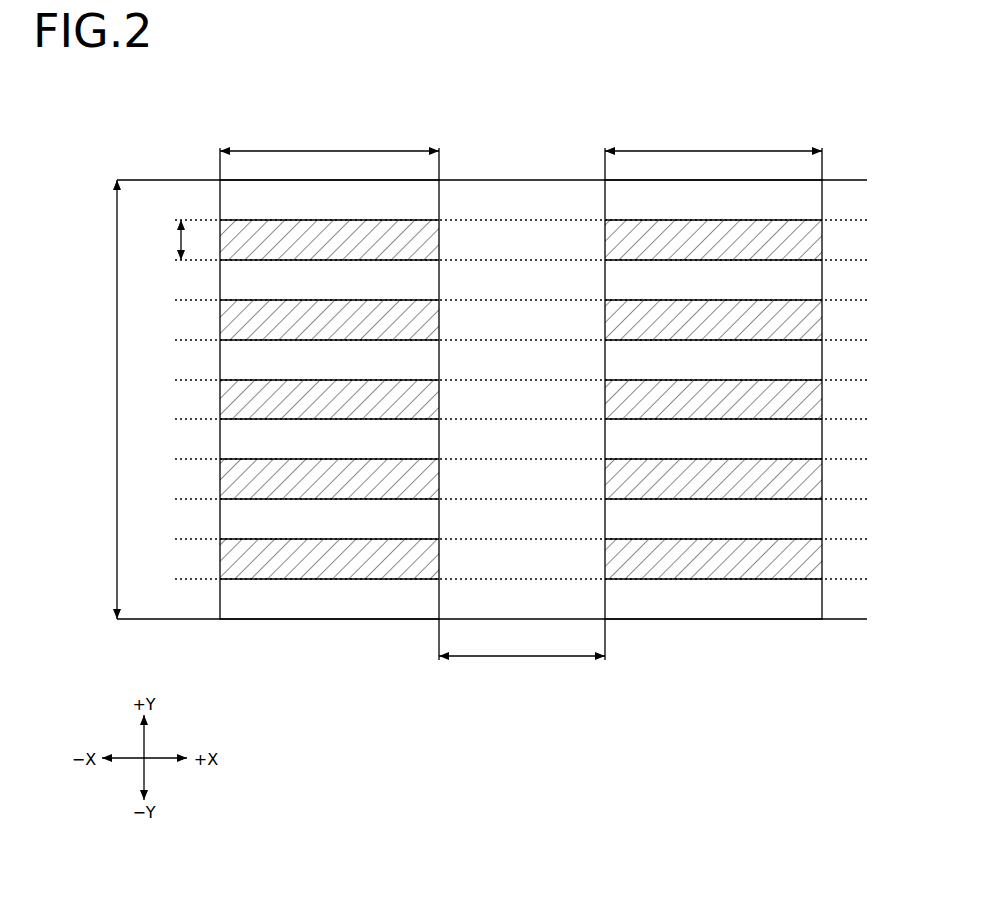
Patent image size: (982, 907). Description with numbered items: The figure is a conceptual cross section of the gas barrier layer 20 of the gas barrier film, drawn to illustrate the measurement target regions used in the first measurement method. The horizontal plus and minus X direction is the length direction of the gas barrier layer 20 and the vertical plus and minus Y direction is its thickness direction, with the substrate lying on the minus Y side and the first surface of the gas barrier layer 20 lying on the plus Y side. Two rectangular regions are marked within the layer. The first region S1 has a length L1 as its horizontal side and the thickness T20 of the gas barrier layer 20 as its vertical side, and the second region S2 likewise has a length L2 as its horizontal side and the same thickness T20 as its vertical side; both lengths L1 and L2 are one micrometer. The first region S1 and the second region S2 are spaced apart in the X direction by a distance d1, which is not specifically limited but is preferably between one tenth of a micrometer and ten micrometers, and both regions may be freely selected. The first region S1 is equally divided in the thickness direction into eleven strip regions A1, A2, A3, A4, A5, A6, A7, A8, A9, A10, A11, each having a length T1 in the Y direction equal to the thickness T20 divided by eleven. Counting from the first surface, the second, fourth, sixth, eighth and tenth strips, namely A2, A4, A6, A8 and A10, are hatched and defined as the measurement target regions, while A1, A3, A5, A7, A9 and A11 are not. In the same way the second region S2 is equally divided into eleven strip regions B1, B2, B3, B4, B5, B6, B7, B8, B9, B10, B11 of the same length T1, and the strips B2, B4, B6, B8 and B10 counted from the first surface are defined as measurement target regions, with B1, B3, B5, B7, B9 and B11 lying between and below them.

The gas barrier layer 20 is at (828, 100).
The first region S1 is at (325, 624).
The second region S2 is at (710, 624).
The length L1 is at (329, 138).
The length L2 is at (713, 138).
The distance d1 is at (522, 643).
The thickness T20 is at (100, 399).
The length of each strip region T1 is at (178, 239).
The first strip region A1 is at (329, 200).
The second strip region A2 is at (329, 240).
The third strip region A3 is at (329, 280).
The fourth strip region A4 is at (329, 320).
The fifth strip region A5 is at (329, 360).
The sixth strip region A6 is at (329, 399).
The seventh strip region A7 is at (329, 439).
The eighth strip region A8 is at (329, 479).
The ninth strip region A9 is at (329, 519).
The tenth strip region A10 is at (329, 559).
The eleventh strip region A11 is at (329, 599).
The first strip region B1 is at (713, 200).
The second strip region B2 is at (713, 240).
The third strip region B3 is at (713, 280).
The fourth strip region B4 is at (713, 320).
The fifth strip region B5 is at (713, 360).
The sixth strip region B6 is at (713, 399).
The seventh strip region B7 is at (713, 439).
The eighth strip region B8 is at (713, 479).
The ninth strip region B9 is at (713, 519).
The tenth strip region B10 is at (713, 559).
The eleventh strip region B11 is at (713, 599).